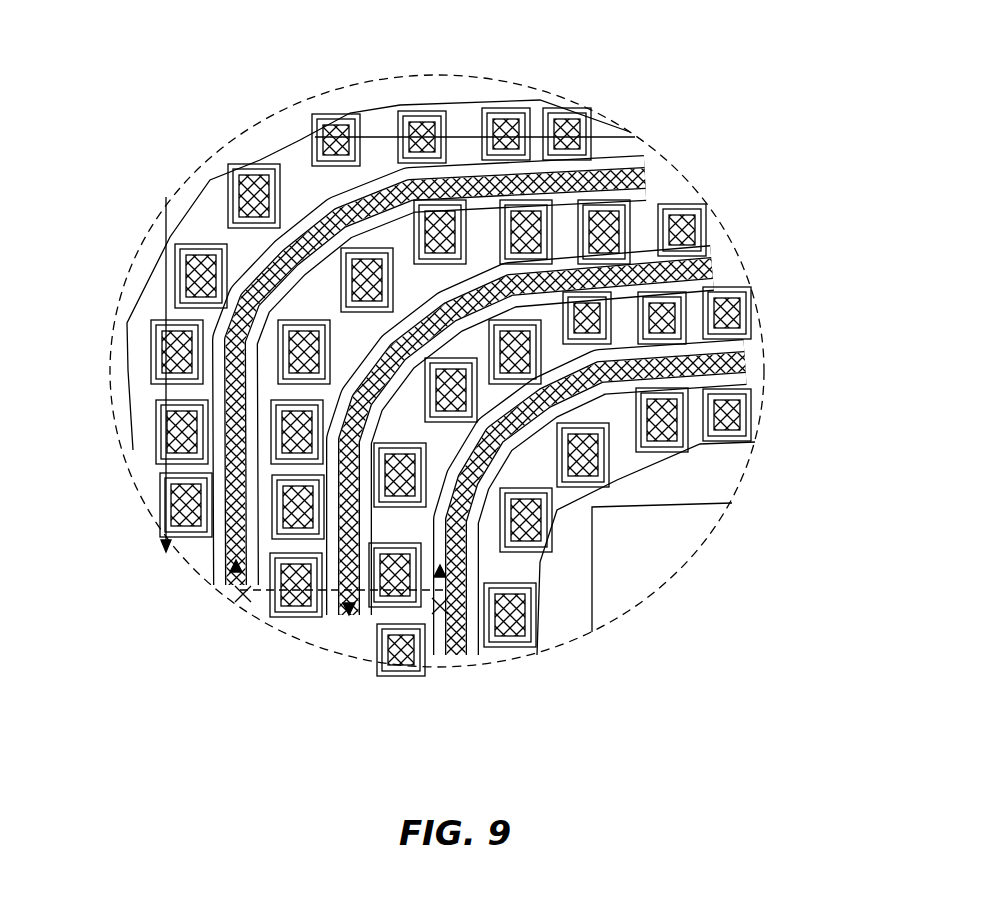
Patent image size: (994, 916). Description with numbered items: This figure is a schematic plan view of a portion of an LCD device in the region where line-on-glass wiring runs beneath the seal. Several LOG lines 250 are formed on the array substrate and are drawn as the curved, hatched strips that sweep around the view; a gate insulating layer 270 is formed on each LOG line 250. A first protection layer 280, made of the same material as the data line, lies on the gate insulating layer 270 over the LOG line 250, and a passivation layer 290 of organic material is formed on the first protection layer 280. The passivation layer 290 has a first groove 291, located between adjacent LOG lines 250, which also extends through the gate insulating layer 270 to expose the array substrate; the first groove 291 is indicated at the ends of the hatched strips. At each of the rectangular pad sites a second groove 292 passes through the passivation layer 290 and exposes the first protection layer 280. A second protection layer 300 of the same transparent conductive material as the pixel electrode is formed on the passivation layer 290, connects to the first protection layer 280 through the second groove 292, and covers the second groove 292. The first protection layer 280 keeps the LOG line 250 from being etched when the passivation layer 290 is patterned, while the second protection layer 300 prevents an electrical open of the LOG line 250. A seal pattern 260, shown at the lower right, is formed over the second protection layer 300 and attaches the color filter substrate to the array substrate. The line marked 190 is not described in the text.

The signal line 190 is at (412, 112).
The LOG line 250 is at (510, 97).
The seal pattern 260 is at (640, 508).
The gate insulating layer 270 is at (280, 635).
The first protection layer 280 is at (433, 117).
The passivation layer 290 is at (235, 596).
The first groove 291 is at (232, 564).
The second groove 292 is at (333, 123).
The second protection layer 300 is at (752, 337).